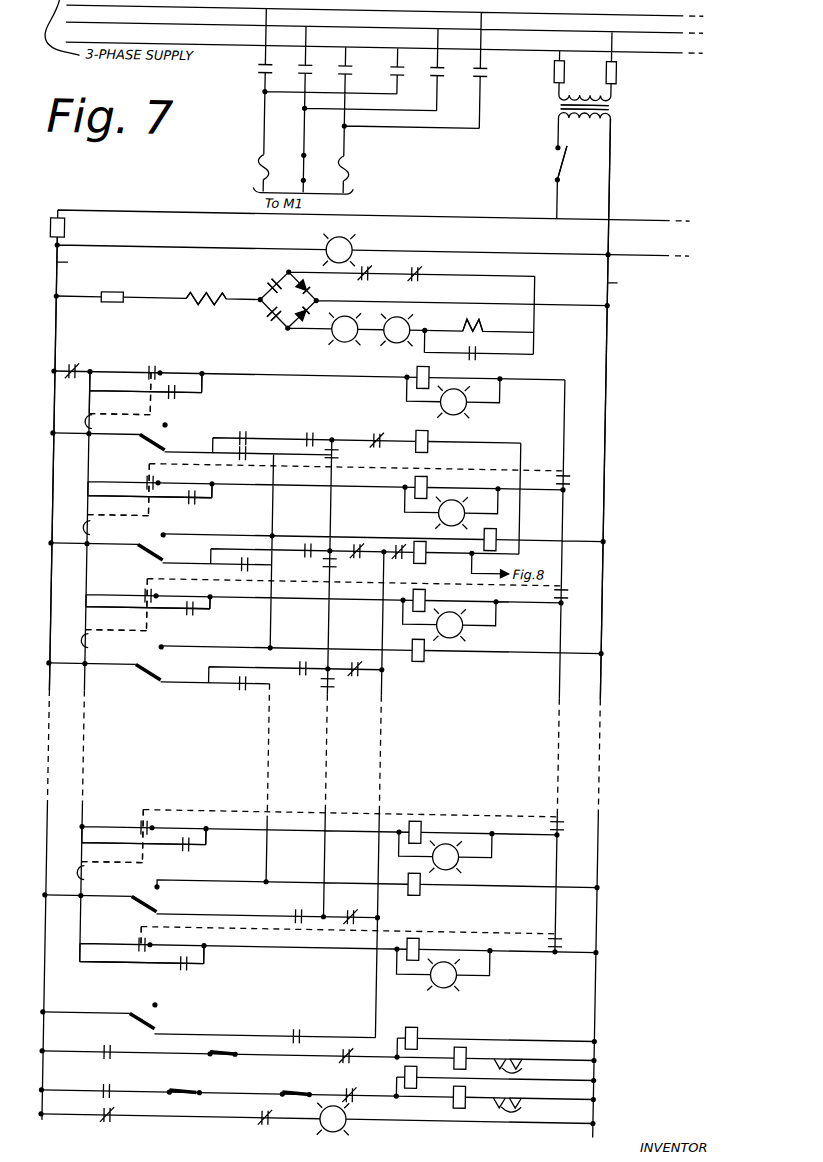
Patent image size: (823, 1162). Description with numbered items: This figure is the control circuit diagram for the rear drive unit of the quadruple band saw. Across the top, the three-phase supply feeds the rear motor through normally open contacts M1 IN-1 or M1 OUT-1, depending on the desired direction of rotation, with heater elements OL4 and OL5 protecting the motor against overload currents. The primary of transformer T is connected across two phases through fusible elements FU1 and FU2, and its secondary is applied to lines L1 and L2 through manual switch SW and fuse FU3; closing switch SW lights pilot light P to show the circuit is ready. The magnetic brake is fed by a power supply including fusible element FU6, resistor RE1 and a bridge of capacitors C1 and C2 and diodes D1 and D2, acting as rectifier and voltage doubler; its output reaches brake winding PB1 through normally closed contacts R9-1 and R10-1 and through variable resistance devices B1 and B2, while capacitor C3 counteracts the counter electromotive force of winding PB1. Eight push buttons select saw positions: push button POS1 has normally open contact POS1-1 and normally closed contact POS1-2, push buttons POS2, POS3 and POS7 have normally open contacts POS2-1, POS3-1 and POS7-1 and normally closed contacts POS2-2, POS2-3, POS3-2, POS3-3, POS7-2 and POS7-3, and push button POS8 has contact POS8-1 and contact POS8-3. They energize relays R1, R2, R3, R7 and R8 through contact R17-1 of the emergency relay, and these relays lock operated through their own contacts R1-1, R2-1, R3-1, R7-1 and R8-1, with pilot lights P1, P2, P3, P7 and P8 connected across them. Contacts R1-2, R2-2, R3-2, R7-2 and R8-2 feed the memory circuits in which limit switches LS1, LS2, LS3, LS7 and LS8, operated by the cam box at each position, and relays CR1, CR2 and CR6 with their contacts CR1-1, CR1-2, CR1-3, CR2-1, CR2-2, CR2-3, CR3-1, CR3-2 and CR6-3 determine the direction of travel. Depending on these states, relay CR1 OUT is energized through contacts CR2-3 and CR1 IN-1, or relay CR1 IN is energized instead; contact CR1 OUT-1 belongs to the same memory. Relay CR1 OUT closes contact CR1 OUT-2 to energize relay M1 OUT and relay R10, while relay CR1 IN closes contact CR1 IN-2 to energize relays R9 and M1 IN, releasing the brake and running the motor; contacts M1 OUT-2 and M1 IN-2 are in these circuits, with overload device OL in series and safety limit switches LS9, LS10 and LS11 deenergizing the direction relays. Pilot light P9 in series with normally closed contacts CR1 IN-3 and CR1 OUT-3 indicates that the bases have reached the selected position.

The normally open contact M1 IN-1 is at (338, 70).
The normally open contact M1 OUT-1 is at (476, 72).
The heater element OL4 is at (242, 167).
The heater element OL5 is at (359, 169).
The fusible element FU1 is at (549, 70).
The fusible element FU2 is at (612, 70).
The transformer T is at (616, 106).
The manual switch SW is at (574, 164).
The fuse FU3 is at (73, 229).
The pilot light P is at (349, 241).
The line L1 is at (67, 463).
The line L2 is at (619, 409).
The fusible element FU6 is at (114, 288).
The resistor RE1 is at (204, 290).
The capacitor C1 is at (263, 277).
The capacitor C2 is at (260, 317).
The diode D1 is at (316, 283).
The diode D2 is at (302, 330).
The variable resistance device B1 is at (344, 340).
The variable resistance device B2 is at (396, 341).
The normally closed contact R9-1 is at (366, 282).
The normally closed contact R10-1 is at (432, 283).
The brake winding PB1 is at (464, 314).
The capacitor C3 is at (478, 352).
The normally closed contact R17-1 is at (68, 366).
The normally open contact POS1-1 is at (158, 357).
The push button POS1 is at (145, 394).
The contact R1-1 is at (188, 402).
The normally closed contact POS1-2 is at (113, 433).
The limit switch LS1 is at (170, 432).
The contact CR1-1 is at (244, 440).
The contact R1-2 is at (306, 433).
The contact CR1-2 is at (326, 454).
The contact CR1 OUT-1 is at (375, 454).
The relay CR1 IN is at (429, 440).
The relay R1 is at (429, 366).
The pilot light P1 is at (466, 402).
The normally open contact POS2-1 is at (150, 478).
The push button POS2 is at (149, 490).
The contact R2-1 is at (196, 508).
The relay R2 is at (417, 485).
The pilot light P2 is at (466, 500).
The normally closed contact POS2-3 is at (568, 476).
The normally closed contact POS2-2 is at (111, 532).
The limit switch LS2 is at (167, 549).
The contact R2-2 is at (302, 540).
The normally closed contact CR1 IN-1 is at (399, 540).
The relay CR1 is at (487, 546).
The contact CR2-2 is at (326, 564).
The contact CR1-3 is at (343, 565).
The relay CR1 OUT is at (437, 566).
The contact CR2-1 is at (250, 570).
The normally open contact POS3-1 is at (148, 590).
The push button POS3 is at (147, 605).
The contact R3-1 is at (194, 619).
The relay R3 is at (416, 600).
The pilot light P3 is at (466, 625).
The normally closed contact POS3-3 is at (568, 586).
The normally closed contact POS3-2 is at (109, 645).
The limit switch LS3 is at (165, 668).
The contact R3-2 is at (302, 658).
The contact CR3-1 is at (256, 696).
The contact CR3-2 is at (326, 685).
The relay CR2 is at (429, 650).
The normally closed contact CR2-3 is at (366, 670).
The normally open contact POS7-1 is at (148, 818).
The push button POS7 is at (143, 836).
The contact R7-1 is at (192, 854).
The relay R7 is at (429, 818).
The pilot light P7 is at (466, 857).
The normally closed contact POS7-3 is at (568, 820).
The normally closed contact POS7-2 is at (105, 876).
The limit switch LS7 is at (162, 900).
The contact R7-2 is at (282, 909).
The contact CR6-3 is at (340, 910).
The relay CR6 is at (429, 884).
The normally open contact POS8-1 is at (112, 934).
The push button POS8 is at (142, 945).
The contact R8-1 is at (190, 973).
The relay R8 is at (429, 936).
The pilot light P8 is at (466, 975).
The normally closed contact POS8-3 is at (568, 934).
The limit switch LS8 is at (159, 1017).
The contact R8-2 is at (298, 1026).
The relay R9 is at (429, 1026).
The relay M1 IN is at (476, 1043).
The contact CR1 IN-2 is at (128, 1038).
The limit switch LS10 is at (215, 1064).
The contact M1 OUT-2 is at (339, 1065).
The relay R10 is at (429, 1064).
The overload device OL is at (522, 1090).
The contact CR1 OUT-2 is at (128, 1077).
The limit switch LS11 is at (180, 1100).
The limit switch LS9 is at (288, 1086).
The contact M1 IN-2 is at (362, 1100).
The relay M1 OUT is at (472, 1102).
The normally closed contact CR1 IN-3 is at (118, 1122).
The normally closed contact CR1 OUT-3 is at (275, 1122).
The pilot light P9 is at (356, 1124).